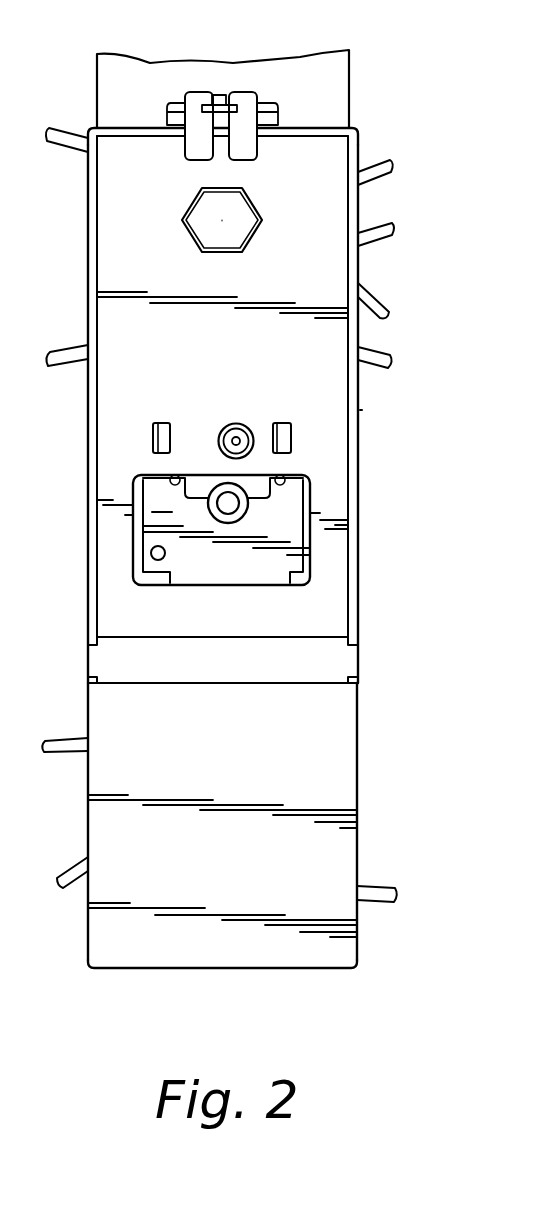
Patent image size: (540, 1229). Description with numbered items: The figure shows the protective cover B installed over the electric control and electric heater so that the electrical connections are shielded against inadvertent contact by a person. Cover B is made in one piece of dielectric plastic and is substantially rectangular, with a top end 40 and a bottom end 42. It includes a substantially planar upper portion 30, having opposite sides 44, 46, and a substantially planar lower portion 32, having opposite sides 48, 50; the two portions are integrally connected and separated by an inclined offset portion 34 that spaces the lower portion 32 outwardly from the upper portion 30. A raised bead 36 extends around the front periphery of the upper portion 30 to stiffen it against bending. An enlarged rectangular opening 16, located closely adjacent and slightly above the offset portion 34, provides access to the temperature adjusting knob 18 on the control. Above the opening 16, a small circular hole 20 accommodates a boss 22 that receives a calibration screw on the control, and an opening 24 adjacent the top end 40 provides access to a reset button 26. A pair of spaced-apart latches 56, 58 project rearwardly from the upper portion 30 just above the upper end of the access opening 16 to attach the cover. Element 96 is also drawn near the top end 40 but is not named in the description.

The retaining clip 96 is at (225, 93).
The top end 40 is at (335, 124).
The opening 24 is at (253, 202).
The reset button 26 is at (227, 230).
The raised bead 36 is at (88, 234).
The upper portion 30 is at (320, 278).
The latch 56 is at (163, 423).
The boss 22 is at (228, 427).
The small circular hole 20 is at (240, 424).
The latch 58 is at (278, 423).
The protective cover B is at (360, 410).
The side 44 is at (88, 405).
The side 46 is at (360, 440).
The rectangular opening 16 is at (305, 500).
The temperature adjusting knob 18 is at (247, 514).
The inclined offset portion 34 is at (333, 663).
The lower portion 32 is at (320, 763).
The side 48 is at (85, 775).
The side 50 is at (357, 792).
The bottom end 42 is at (270, 970).